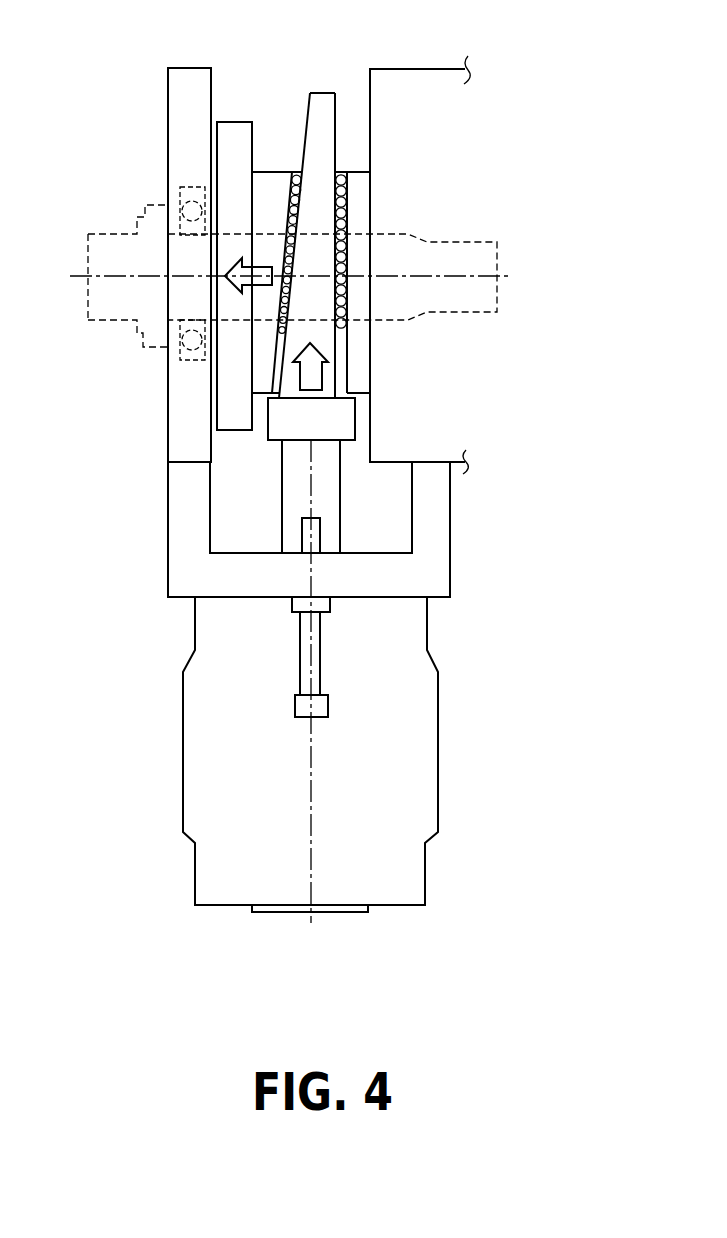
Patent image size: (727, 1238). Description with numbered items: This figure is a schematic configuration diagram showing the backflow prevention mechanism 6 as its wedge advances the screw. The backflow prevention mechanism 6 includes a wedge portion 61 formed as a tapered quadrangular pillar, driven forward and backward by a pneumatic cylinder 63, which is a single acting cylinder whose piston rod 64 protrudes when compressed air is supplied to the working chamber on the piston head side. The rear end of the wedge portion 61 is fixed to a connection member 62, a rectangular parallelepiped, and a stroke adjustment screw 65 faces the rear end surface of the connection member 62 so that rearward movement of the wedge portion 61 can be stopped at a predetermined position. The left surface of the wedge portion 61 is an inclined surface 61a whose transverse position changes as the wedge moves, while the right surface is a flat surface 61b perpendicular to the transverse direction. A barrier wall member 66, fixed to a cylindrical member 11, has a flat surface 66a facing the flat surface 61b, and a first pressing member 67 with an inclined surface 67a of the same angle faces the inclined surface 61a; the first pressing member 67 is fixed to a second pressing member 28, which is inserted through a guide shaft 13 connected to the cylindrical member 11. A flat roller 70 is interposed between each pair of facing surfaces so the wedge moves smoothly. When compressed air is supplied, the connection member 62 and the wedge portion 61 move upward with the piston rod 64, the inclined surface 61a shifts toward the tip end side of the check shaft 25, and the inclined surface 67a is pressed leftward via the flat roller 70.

The backflow prevention mechanism 6 is at (466, 814).
The cylindrical member 11 is at (418, 76).
The guide shaft 13 is at (190, 77).
The check shaft 25 is at (115, 198).
The second pressing member 28 is at (233, 125).
The wedge portion 61 is at (309, 200).
The inclined surface 61a is at (308, 106).
The flat surface 61b is at (338, 106).
The connection member 62 is at (272, 441).
The pneumatic cylinder 63 is at (193, 740).
The piston rod 64 is at (288, 502).
The stroke adjustment screw 65 is at (322, 636).
The barrier wall member 66 is at (404, 298).
The flat surface 66a is at (353, 400).
The first pressing member 67 is at (192, 275).
The inclined surface 67a is at (273, 395).
The flat roller 70 is at (280, 343).